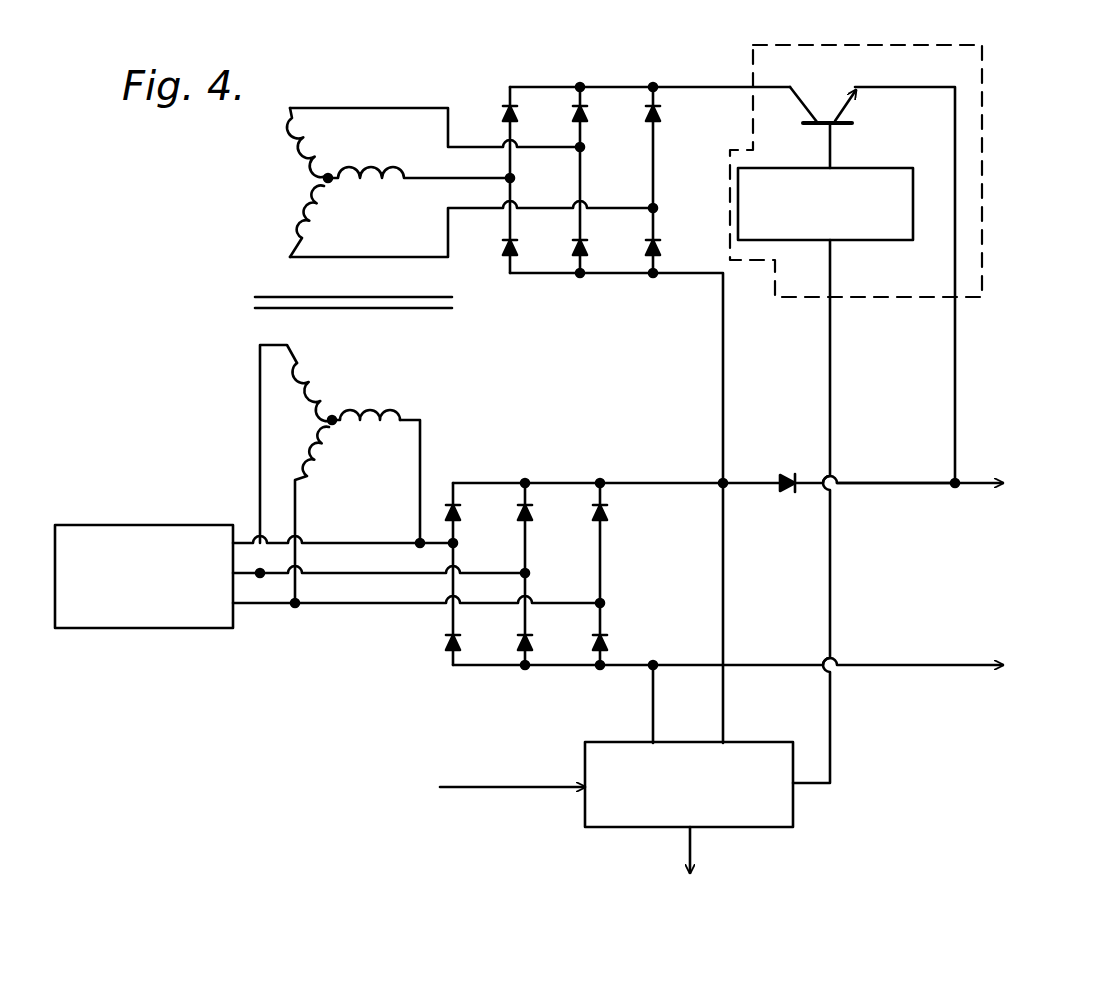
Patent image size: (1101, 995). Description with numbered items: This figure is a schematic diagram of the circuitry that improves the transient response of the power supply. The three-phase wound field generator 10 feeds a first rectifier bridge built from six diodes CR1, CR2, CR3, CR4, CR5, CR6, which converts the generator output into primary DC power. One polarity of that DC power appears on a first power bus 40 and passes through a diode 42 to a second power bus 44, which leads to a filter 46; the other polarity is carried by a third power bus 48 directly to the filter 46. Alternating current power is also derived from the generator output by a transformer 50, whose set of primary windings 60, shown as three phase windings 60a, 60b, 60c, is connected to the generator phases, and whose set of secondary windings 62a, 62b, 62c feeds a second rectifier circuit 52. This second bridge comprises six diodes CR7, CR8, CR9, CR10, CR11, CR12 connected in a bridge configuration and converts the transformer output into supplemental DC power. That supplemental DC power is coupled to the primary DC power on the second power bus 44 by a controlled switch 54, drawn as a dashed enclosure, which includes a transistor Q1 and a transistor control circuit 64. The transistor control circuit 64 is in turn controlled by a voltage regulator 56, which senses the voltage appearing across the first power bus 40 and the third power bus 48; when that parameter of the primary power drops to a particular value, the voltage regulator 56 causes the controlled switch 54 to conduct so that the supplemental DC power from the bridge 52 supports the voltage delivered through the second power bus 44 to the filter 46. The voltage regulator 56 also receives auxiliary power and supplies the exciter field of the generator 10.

The alternator 10 is at (182, 628).
The first power bus 40 is at (703, 488).
The diode 42 is at (790, 494).
The second power bus 44 is at (890, 486).
The filter 46 is at (1001, 570).
The third power bus 48 is at (790, 660).
The transformer 50 is at (208, 328).
The second rectifier circuit 52 is at (597, 285).
The controlled switch 54 is at (983, 86).
The voltage regulator 56 is at (780, 805).
The primary windings 60 is at (358, 392).
The primary winding 60a is at (375, 424).
The primary winding 60b is at (331, 378).
The primary winding 60c is at (316, 472).
The secondary winding 62a is at (375, 184).
The secondary winding 62b is at (290, 140).
The secondary winding 62c is at (305, 220).
The transistor control circuit 64 is at (890, 235).
The transistor Q1 is at (850, 95).
The diode CR1 is at (465, 512).
The diode CR2 is at (483, 632).
The diode CR3 is at (537, 512).
The diode CR4 is at (555, 632).
The diode CR5 is at (608, 512).
The diode CR6 is at (610, 642).
The diode CR7 is at (530, 112).
The diode CR8 is at (545, 235).
The diode CR9 is at (592, 112).
The diode CR10 is at (612, 235).
The diode CR11 is at (662, 110).
The diode CR12 is at (685, 235).